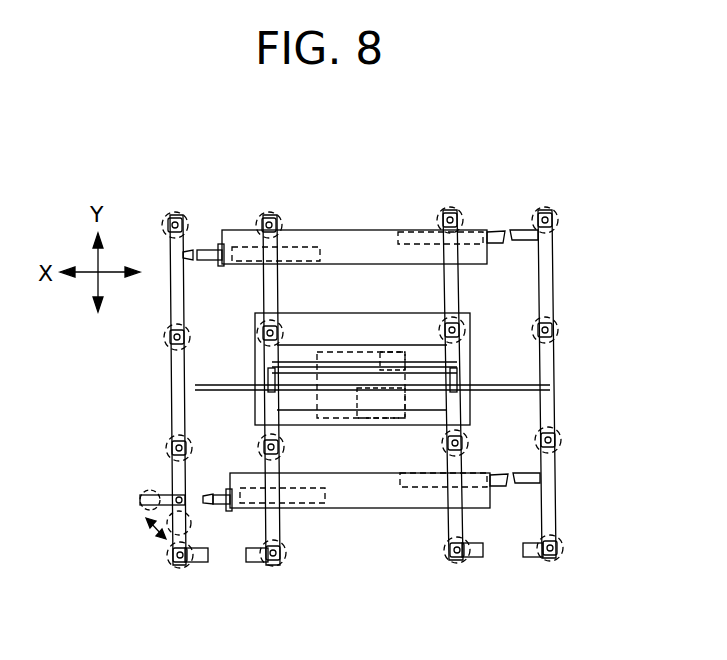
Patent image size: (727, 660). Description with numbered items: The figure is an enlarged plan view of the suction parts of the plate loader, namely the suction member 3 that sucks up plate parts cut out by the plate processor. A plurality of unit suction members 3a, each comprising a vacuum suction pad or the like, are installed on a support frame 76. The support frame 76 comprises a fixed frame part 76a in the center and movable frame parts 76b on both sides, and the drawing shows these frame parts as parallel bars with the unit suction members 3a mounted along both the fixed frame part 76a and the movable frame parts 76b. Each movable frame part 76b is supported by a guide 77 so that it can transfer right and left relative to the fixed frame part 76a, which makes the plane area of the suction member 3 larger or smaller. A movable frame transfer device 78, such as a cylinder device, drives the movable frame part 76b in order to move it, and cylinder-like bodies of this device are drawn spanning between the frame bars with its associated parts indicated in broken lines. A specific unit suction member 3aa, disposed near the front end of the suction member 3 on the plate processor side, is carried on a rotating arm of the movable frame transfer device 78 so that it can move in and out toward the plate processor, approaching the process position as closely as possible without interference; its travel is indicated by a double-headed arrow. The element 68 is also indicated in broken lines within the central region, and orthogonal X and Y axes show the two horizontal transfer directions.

The suction member 3 is at (479, 190).
The unit suction member 3a is at (268, 211).
The specific unit suction member 3aa is at (140, 500).
The sensor 68 is at (340, 350).
The support frame 76 is at (259, 527).
The fixed frame part 76a is at (445, 523).
The movable frame part 76b is at (176, 398).
The guide 77 is at (370, 510).
The movable frame transfer device 78 is at (379, 355).